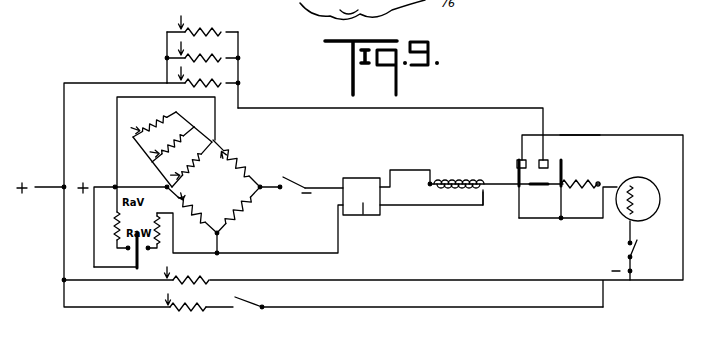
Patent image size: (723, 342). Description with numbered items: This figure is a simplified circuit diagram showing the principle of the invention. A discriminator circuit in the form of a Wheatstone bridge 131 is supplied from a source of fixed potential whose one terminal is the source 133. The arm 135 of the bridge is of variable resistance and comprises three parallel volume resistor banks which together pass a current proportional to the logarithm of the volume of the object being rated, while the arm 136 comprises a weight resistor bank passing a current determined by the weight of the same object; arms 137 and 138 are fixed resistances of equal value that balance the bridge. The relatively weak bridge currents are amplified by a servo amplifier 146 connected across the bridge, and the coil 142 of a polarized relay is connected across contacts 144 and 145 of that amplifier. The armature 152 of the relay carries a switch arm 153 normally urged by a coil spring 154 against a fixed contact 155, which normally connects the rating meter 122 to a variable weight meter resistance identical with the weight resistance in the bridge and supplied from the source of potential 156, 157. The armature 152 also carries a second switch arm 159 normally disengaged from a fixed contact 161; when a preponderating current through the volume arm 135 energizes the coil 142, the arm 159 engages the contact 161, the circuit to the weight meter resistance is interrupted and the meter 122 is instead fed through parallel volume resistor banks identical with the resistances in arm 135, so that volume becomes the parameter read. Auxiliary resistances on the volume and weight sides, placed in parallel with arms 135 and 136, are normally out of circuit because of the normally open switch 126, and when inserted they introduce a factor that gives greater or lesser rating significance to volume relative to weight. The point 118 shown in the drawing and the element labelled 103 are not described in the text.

The armature 103 is at (480, 218).
The bridge output node 118 is at (220, 233).
The rating meter 122 is at (648, 171).
The normally open switch 126 is at (137, 265).
The Wheatstone bridge 131 is at (206, 214).
The source of fixed potential 133 is at (346, 178).
The arm of the bridge 135 is at (236, 157).
The arm of the bridge 136 is at (203, 229).
The arm of the Wheatstone bridge 137 is at (297, 170).
The arm of the Wheatstone bridge 138 is at (249, 209).
The coil 142 is at (442, 180).
The contact 144 is at (391, 186).
The contact 145 is at (386, 215).
The servo amplifier 146 is at (364, 216).
The armature 152 is at (470, 182).
The switch arm 153 is at (518, 188).
The coil spring 154 is at (583, 182).
The fixed contact 155 is at (519, 159).
The source of potential 156 is at (43, 189).
The source of potential 157 is at (633, 272).
The second switch arm 159 is at (572, 135).
The fixed contact 161 is at (545, 159).